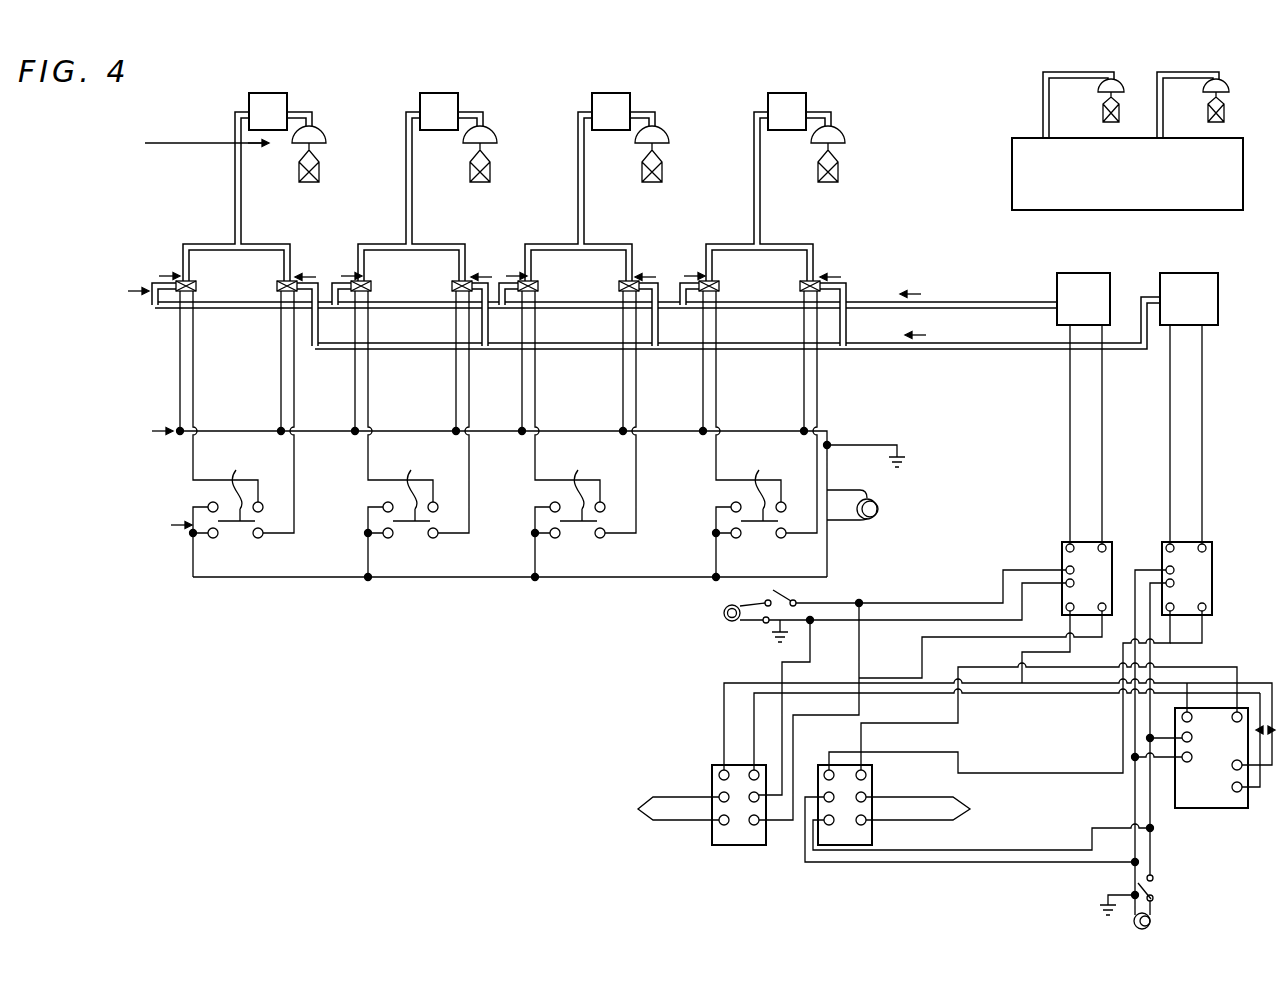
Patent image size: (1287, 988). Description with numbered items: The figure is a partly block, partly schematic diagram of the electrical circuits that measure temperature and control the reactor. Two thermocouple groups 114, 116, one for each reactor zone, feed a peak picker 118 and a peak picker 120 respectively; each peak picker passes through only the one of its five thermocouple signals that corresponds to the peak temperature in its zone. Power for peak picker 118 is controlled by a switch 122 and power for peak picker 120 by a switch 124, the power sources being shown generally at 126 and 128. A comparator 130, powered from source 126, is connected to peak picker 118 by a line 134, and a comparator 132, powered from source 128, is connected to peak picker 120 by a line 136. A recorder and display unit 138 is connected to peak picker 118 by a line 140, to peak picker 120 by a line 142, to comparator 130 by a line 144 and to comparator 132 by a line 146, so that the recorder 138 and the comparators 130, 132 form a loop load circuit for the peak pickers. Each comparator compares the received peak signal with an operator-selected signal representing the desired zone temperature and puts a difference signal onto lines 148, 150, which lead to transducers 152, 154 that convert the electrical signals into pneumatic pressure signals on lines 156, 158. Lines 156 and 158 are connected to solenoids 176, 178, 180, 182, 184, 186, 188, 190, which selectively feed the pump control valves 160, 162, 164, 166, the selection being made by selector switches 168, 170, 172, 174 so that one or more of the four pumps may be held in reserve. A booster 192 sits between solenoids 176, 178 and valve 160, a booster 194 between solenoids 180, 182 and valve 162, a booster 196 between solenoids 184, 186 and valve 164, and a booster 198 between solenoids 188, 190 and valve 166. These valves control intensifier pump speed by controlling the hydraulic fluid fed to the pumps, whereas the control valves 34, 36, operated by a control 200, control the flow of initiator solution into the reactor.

The control valve 34 is at (1122, 80).
The control valve 36 is at (1224, 82).
The thermocouple group 114 is at (652, 806).
The thermocouple group 116 is at (970, 809).
The peak picker 118 is at (717, 838).
The peak picker 120 is at (836, 838).
The switch 122 is at (785, 594).
The switch 124 is at (1154, 880).
The power source 126 is at (724, 616).
The power source 128 is at (1151, 924).
The comparator 130 is at (1087, 578).
The comparator 132 is at (1187, 578).
The line 134 is at (921, 650).
The line 136 is at (1043, 753).
The recorder and display unit 138 is at (1211, 758).
The line 140 is at (1250, 790).
The line 142 is at (1212, 663).
The line 144 is at (1073, 645).
The line 146 is at (1178, 626).
The line 148 is at (1103, 428).
The line 150 is at (1205, 426).
The transducer 152 is at (1098, 264).
The transducer 154 is at (1228, 264).
The line 156 is at (1044, 298).
The line 158 is at (1040, 345).
The control valve 160 is at (323, 145).
The control valve 162 is at (494, 145).
The control valve 164 is at (666, 145).
The control valve 166 is at (842, 145).
The selector switch 168 is at (236, 434).
The selector switch 170 is at (411, 434).
The selector switch 172 is at (578, 434).
The selector switch 174 is at (759, 434).
The solenoid 176 is at (197, 283).
The solenoid 178 is at (295, 279).
The solenoid 180 is at (351, 283).
The solenoid 182 is at (466, 279).
The solenoid 184 is at (530, 284).
The solenoid 186 is at (638, 278).
The solenoid 188 is at (712, 283).
The solenoid 190 is at (814, 279).
The booster 192 is at (289, 80).
The booster 194 is at (460, 80).
The booster 196 is at (632, 80).
The booster 198 is at (808, 80).
The control 200 is at (1127, 174).